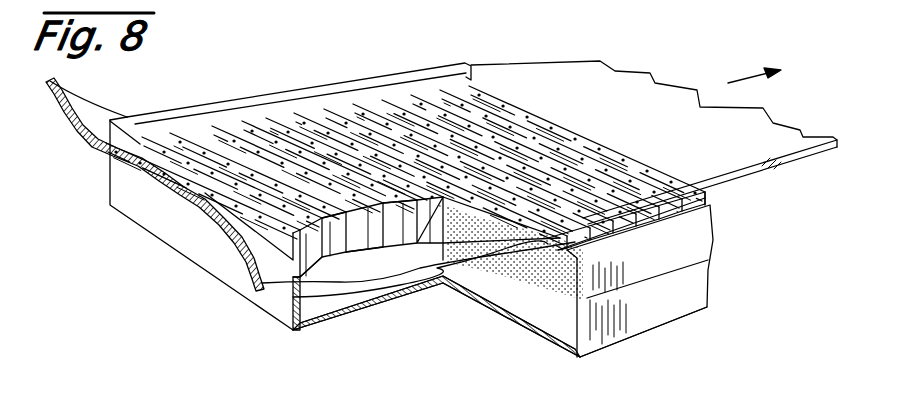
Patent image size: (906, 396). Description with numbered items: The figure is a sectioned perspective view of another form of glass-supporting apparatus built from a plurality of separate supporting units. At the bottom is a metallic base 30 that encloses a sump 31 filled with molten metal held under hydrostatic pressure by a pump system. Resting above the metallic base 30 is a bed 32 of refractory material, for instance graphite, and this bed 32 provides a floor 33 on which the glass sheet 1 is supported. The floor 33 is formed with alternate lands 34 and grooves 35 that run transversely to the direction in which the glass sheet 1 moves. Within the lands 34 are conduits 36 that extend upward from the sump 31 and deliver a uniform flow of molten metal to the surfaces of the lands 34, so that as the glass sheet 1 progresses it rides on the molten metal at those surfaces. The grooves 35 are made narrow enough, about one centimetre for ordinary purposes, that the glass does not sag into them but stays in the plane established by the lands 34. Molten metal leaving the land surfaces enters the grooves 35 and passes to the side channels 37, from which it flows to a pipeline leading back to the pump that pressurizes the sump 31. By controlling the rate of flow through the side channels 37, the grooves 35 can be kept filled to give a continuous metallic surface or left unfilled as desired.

The glass sheet 1 is at (58, 103).
The metallic base 30 is at (687, 293).
The sump 31 is at (553, 307).
The bed 32 is at (703, 240).
The floor 33 is at (200, 130).
The lands 34 is at (233, 160).
The grooves 35 is at (265, 158).
The conduits 36 is at (256, 199).
The side channels 37 is at (557, 267).